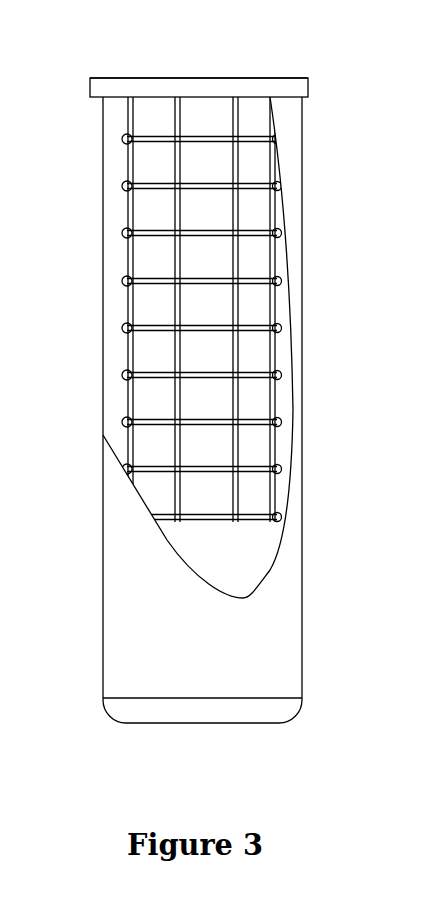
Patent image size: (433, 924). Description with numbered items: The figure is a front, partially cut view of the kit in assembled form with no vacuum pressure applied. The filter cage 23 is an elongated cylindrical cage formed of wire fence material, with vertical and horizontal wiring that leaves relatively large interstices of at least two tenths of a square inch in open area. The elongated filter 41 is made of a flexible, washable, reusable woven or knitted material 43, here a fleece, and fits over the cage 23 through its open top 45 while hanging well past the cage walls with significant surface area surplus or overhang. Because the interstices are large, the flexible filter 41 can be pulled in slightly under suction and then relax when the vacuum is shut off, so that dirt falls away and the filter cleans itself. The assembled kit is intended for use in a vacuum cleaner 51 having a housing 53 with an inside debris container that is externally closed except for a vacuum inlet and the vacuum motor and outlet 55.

The filter cage 23 is at (200, 115).
The elongated filter 41 is at (163, 536).
The flexible, washable reusable material 43 is at (140, 583).
The open top 45 is at (333, 358).
The vacuum cleaner 51 is at (168, 80).
The housing 53 is at (201, 83).
The vacuum motor and outlet 55 is at (72, 226).